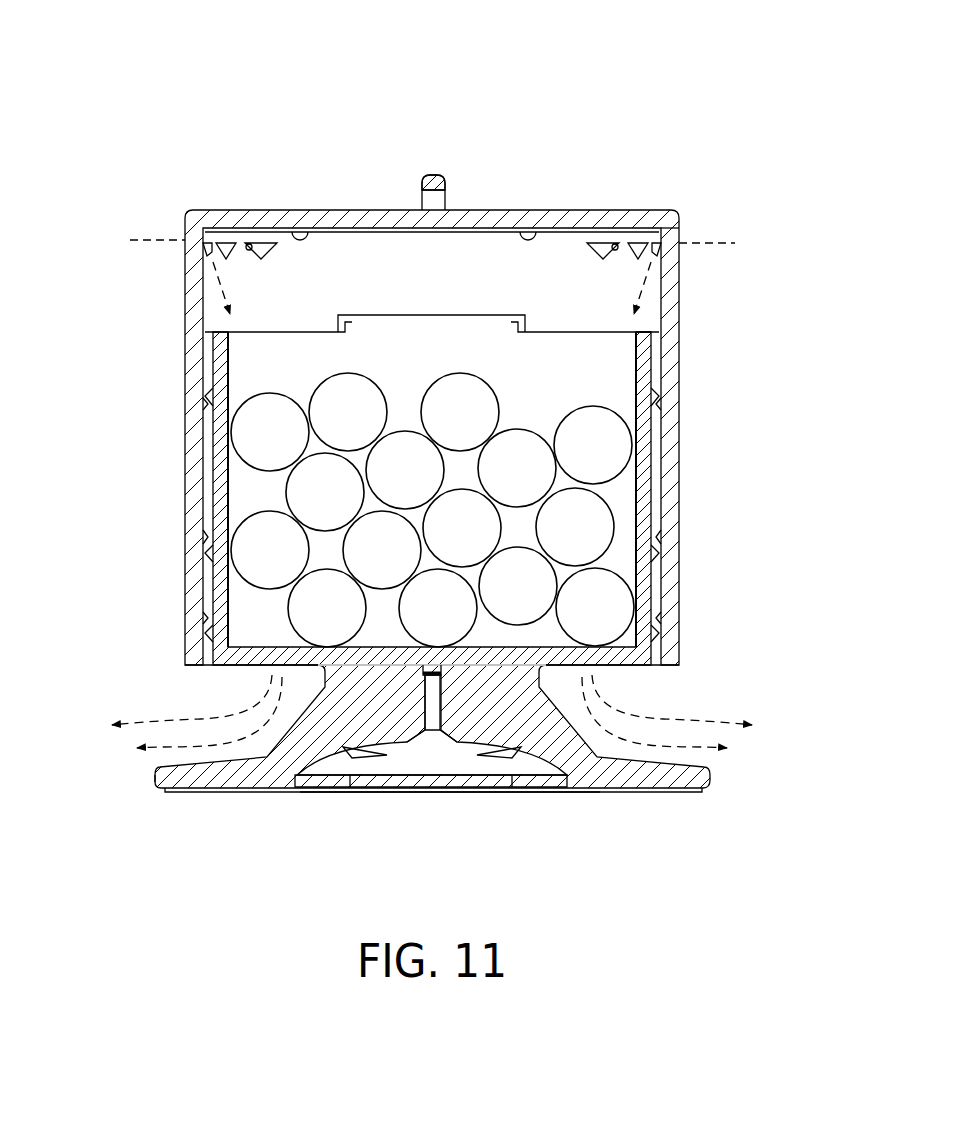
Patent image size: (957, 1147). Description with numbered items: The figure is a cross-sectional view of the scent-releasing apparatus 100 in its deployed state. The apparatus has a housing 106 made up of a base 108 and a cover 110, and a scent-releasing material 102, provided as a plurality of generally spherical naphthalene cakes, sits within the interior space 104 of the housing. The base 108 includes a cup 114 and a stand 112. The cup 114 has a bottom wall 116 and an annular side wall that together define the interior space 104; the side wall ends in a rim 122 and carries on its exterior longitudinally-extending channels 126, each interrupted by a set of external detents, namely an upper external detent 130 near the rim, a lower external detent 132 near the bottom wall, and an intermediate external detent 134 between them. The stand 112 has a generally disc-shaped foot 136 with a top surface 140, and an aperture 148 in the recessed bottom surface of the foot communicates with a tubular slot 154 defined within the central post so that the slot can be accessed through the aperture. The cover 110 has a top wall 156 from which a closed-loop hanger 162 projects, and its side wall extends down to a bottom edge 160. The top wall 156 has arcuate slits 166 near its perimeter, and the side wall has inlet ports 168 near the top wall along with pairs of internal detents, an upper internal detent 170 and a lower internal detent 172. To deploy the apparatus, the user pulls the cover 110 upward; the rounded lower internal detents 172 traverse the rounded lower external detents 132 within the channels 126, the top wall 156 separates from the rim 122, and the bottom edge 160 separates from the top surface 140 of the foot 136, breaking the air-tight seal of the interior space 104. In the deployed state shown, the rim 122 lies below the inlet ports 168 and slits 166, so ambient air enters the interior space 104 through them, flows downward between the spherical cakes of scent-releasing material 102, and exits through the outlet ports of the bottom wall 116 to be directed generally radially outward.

The scent-releasing apparatus 100 is at (152, 92).
The scent-releasing material 102 is at (625, 405).
The interior space 104 is at (398, 369).
The housing 106 is at (678, 209).
The base 108 is at (170, 799).
The cover 110 is at (190, 212).
The stand 112 is at (592, 794).
The cup 114 is at (650, 330).
The bottom wall 116 is at (247, 673).
The rim 122 is at (572, 330).
The channels 126 is at (218, 478).
The upper external detent 130 is at (213, 398).
The lower external detent 132 is at (203, 618).
The intermediate external detent 134 is at (213, 562).
The foot 136 is at (714, 784).
The top surface 140 is at (680, 763).
The aperture 148 is at (432, 744).
The tubular slot 154 is at (423, 697).
The top wall 156 is at (558, 210).
The bottom edge 160 is at (673, 668).
The closed-loop hanger 162 is at (432, 175).
The slits 166 is at (300, 232).
The inlet ports 168 is at (182, 241).
The upper internal detent 170 is at (203, 430).
The lower internal detent 172 is at (203, 537).